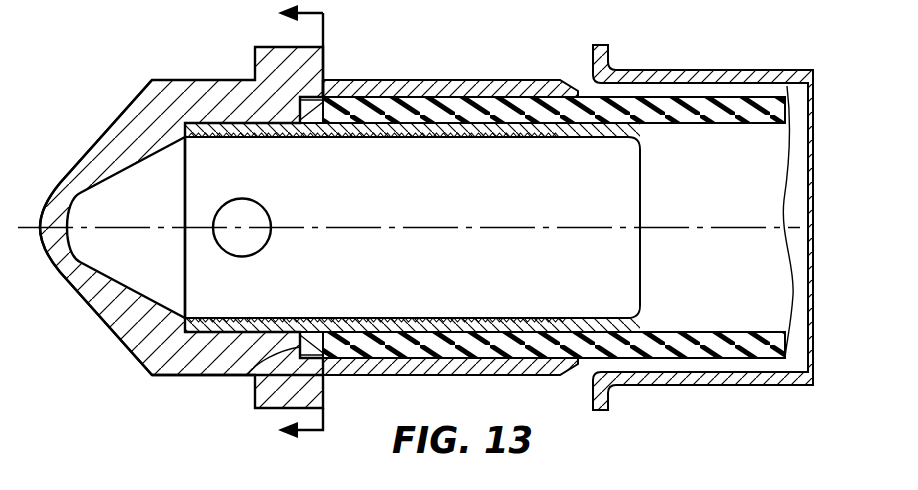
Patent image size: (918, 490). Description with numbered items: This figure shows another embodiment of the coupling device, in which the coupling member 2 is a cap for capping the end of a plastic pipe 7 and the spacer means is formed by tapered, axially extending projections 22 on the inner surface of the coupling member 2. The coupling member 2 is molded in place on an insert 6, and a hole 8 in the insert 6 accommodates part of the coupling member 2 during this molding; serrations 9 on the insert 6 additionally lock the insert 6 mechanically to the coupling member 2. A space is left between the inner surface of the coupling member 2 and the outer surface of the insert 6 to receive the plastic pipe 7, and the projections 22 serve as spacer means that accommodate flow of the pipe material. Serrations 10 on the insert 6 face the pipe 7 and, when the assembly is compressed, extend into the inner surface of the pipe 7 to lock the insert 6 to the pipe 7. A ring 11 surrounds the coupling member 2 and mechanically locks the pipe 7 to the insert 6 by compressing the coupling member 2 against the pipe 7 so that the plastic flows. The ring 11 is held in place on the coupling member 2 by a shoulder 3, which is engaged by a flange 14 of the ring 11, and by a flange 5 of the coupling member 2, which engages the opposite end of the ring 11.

The coupling member 2 is at (102, 325).
The shoulder 3 is at (257, 60).
The flange 5 is at (567, 82).
The insert 6 is at (645, 192).
The plastic pipe 7 is at (694, 125).
The hole 8 is at (230, 204).
The serrations 9 is at (172, 378).
The serrations 10 is at (367, 138).
The ring 11 is at (696, 64).
The flange 14 is at (637, 29).
The tapered, axially extending projections 22 is at (323, 84).